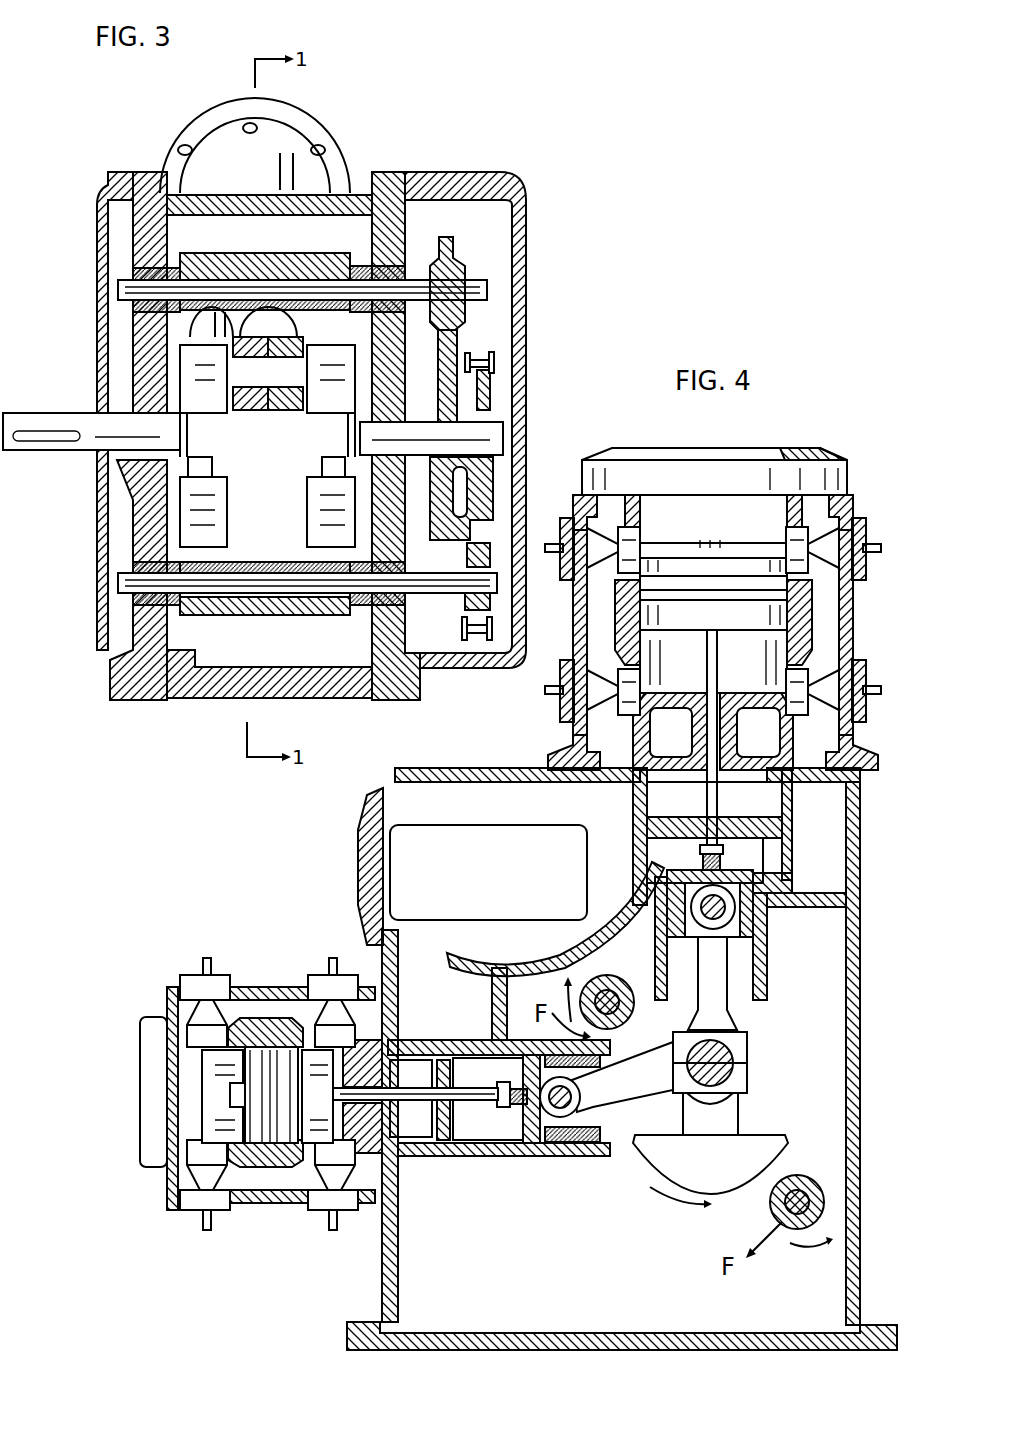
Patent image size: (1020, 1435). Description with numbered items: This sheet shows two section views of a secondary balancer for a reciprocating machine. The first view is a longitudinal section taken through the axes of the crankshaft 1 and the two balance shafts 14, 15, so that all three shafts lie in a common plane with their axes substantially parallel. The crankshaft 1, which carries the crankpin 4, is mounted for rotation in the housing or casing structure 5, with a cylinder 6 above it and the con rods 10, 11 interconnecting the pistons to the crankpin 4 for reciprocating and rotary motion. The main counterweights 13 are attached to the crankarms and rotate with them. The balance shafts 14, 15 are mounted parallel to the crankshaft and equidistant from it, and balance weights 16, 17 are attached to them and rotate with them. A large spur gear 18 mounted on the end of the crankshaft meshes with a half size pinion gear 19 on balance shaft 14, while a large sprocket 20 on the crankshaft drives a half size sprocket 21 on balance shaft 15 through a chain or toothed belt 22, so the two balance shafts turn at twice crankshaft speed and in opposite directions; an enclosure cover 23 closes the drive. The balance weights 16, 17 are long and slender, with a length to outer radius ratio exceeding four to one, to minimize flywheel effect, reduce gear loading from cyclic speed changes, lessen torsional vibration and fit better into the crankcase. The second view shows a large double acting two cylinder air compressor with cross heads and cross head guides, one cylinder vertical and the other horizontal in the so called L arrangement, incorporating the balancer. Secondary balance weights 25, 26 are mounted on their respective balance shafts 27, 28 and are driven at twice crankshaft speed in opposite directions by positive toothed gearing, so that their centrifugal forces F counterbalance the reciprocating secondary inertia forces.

In FIG. 3, the crankshaft 1 is at (44, 425).
In FIG. 3, the crankpin 4 is at (300, 368).
In FIG. 3, the housing or casing structure 5 is at (207, 675).
In FIG. 3, the cylinder 6 is at (222, 158).
In FIG. 3, the con rod 10 is at (249, 412).
In FIG. 3, the con rod 11 is at (293, 412).
In FIG. 3, the main counterweights 13 is at (215, 524).
In FIG. 3, the balance shaft 14 is at (122, 287).
In FIG. 3, the balance shaft 15 is at (122, 580).
In FIG. 3, the balance weight 16 is at (263, 262).
In FIG. 3, the balance weight 17 is at (298, 618).
In FIG. 3, the spur gear 18 is at (455, 500).
In FIG. 3, the pinion gear 19 is at (455, 262).
In FIG. 3, the sprocket 20 is at (492, 384).
In FIG. 3, the sprocket 21 is at (468, 606).
In FIG. 3, the chain or toothed belt 22 is at (491, 352).
In FIG. 3, the enclosure cover 23 is at (524, 232).
In FIG. 4, the secondary balance weight 25 is at (601, 1047).
In FIG. 4, the secondary balance weight 26 is at (776, 1197).
In FIG. 4, the balance shaft 27 is at (624, 985).
In FIG. 4, the balance shaft 28 is at (806, 1180).